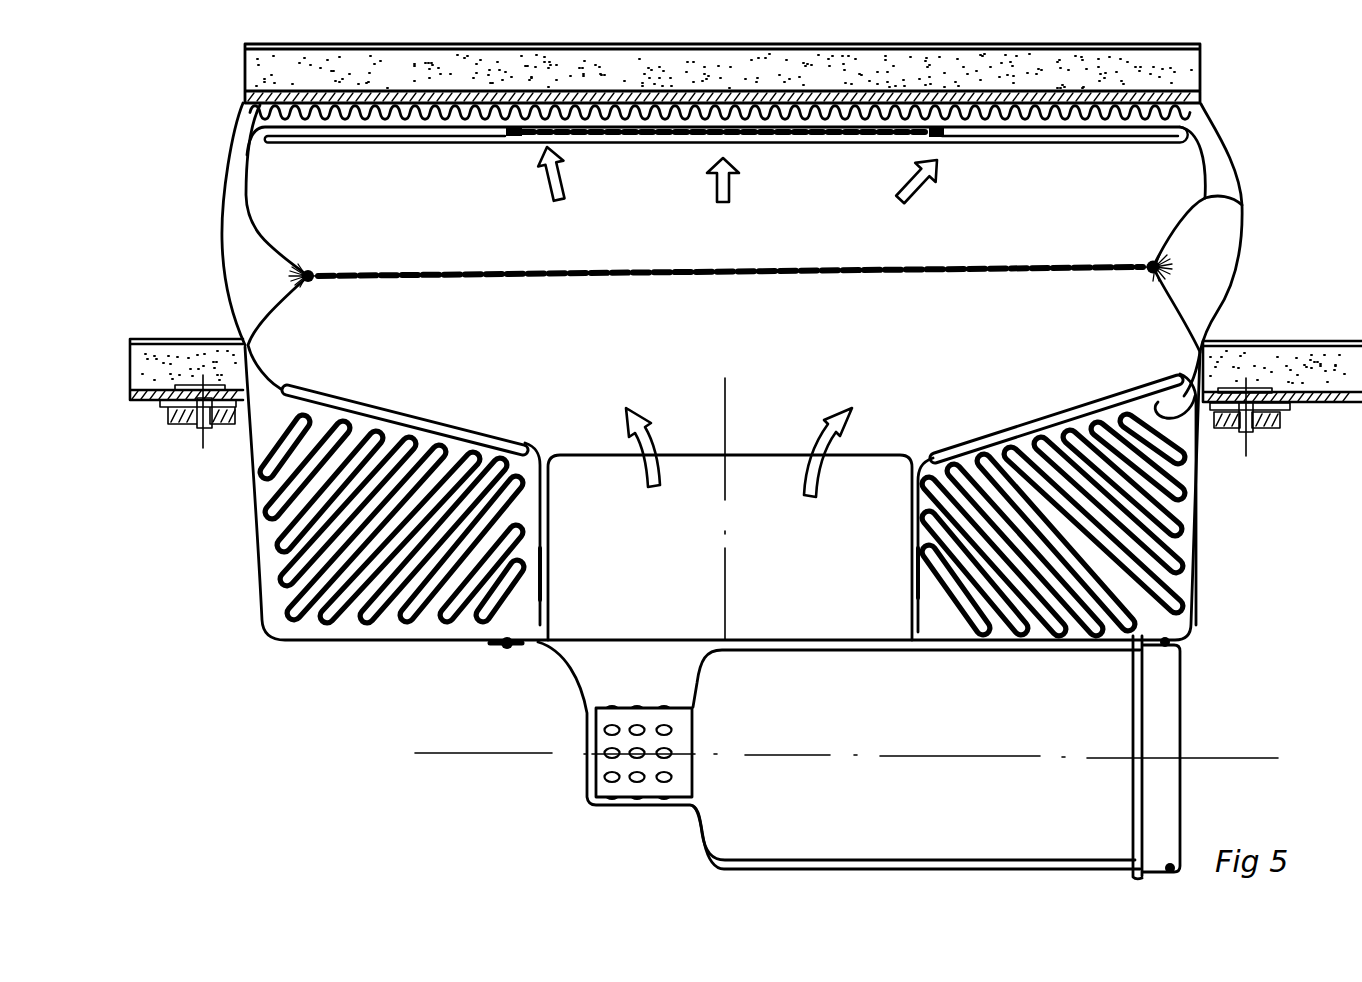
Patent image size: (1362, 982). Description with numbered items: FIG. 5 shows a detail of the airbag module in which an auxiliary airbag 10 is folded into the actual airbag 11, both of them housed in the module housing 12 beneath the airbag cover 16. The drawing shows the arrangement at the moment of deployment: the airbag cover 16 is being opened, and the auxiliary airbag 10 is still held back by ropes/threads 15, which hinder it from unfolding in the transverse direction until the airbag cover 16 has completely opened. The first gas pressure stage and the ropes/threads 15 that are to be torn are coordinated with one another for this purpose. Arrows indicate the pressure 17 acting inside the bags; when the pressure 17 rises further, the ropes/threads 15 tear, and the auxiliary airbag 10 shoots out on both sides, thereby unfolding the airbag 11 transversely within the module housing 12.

The auxiliary airbag 10 is at (1242, 205).
The airbag 11 is at (1240, 263).
The module housing 12 is at (1192, 578).
The ropes/threads 15 is at (1040, 272).
The airbag cover 16 is at (1200, 62).
The pressure 17 is at (915, 197).